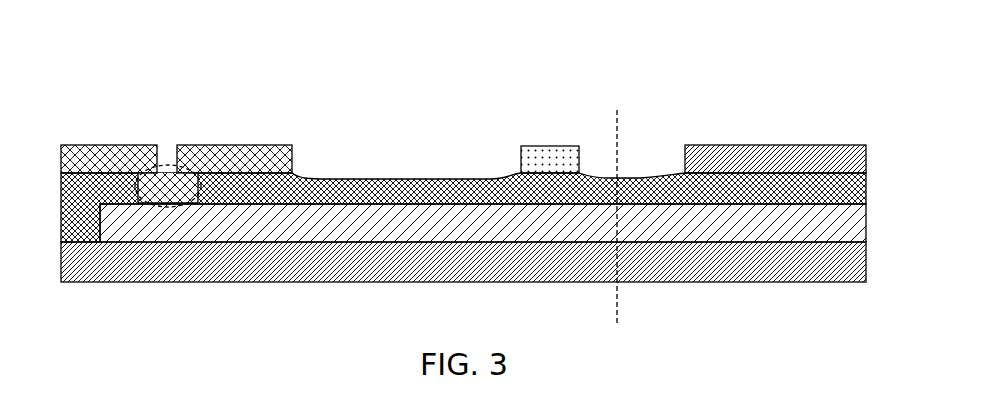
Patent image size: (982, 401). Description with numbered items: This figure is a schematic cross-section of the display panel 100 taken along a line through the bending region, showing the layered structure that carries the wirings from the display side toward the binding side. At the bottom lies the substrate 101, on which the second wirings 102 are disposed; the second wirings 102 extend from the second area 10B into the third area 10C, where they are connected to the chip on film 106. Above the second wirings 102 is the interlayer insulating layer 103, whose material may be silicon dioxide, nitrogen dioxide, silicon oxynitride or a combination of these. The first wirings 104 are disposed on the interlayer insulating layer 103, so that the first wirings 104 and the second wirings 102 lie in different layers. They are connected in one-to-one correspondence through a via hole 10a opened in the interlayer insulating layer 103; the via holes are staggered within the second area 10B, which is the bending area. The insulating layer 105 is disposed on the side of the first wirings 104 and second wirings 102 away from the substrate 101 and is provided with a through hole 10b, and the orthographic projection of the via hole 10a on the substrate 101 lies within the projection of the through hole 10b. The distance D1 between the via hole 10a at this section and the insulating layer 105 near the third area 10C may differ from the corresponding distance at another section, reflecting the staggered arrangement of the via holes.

The display panel 100 is at (463, 185).
The substrate 101 is at (868, 260).
The second wirings 102 is at (868, 224).
The interlayer insulating layer 103 is at (868, 190).
The first wirings 104 is at (61, 151).
The insulating layer 105 is at (553, 165).
The chip on film 106 is at (868, 158).
The via hole 10a is at (163, 181).
The through hole 10b is at (403, 156).
The second area 10B is at (352, 283).
The third area 10C is at (744, 283).
The distance D1 is at (521, 146).